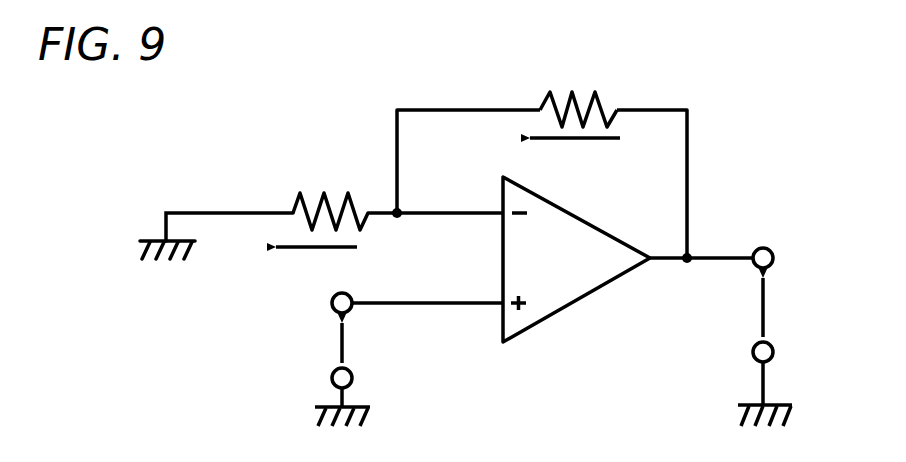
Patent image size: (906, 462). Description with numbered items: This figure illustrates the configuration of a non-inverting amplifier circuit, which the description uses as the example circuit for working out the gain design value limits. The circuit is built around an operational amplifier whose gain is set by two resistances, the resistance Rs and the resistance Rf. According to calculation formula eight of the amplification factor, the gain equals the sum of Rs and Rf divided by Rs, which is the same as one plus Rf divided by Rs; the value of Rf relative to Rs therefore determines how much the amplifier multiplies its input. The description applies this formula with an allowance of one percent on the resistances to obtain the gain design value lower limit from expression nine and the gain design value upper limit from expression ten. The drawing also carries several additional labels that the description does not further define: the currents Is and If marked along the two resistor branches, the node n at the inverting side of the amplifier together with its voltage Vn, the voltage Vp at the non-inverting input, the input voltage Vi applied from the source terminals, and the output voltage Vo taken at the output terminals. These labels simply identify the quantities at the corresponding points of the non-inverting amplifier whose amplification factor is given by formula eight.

The resistance Rs is at (345, 189).
The resistance Rf is at (578, 87).
The current through input resistor Is is at (316, 266).
The feedback current If is at (575, 158).
The inverting input node n is at (404, 205).
The inverting input node voltage Vn is at (441, 236).
The non-inverting input voltage Vp is at (427, 321).
The input voltage source Vi is at (334, 359).
The output voltage Vo is at (774, 337).